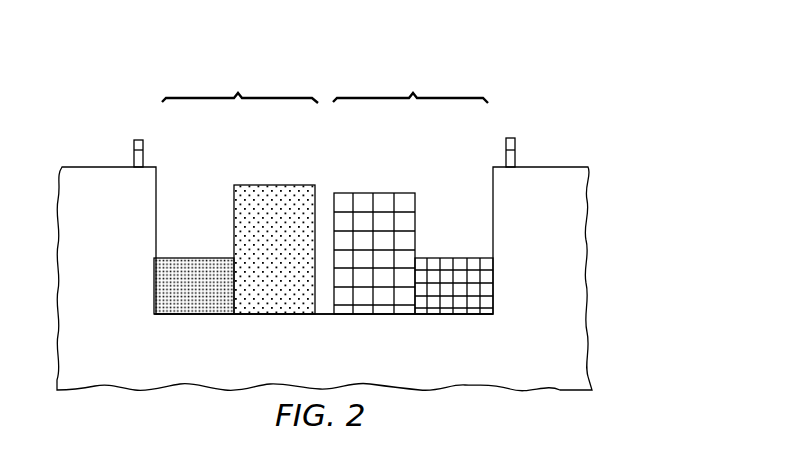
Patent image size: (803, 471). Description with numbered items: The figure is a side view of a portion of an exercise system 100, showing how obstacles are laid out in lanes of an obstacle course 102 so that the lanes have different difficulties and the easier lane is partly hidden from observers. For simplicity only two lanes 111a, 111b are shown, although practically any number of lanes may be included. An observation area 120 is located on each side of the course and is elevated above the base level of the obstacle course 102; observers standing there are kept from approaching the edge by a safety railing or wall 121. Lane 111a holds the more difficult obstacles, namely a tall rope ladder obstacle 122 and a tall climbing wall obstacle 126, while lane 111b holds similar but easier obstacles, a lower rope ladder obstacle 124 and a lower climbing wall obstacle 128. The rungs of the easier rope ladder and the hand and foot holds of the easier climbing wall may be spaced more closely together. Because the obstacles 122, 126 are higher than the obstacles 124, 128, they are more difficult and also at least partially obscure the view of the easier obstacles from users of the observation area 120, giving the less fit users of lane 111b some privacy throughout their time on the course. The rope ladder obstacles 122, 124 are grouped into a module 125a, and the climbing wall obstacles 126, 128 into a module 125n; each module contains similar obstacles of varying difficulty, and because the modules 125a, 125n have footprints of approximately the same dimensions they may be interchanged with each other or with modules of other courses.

The exercise system 100 is at (621, 66).
The obstacle course 102 is at (353, 159).
The lane 111a is at (273, 321).
The lane 111b is at (195, 321).
The observation area 120 is at (106, 175).
The safety railing or wall 121 is at (138, 139).
The obstacle 122 is at (382, 200).
The obstacle 124 is at (447, 262).
The module 125a is at (410, 87).
The module 125n is at (240, 87).
The obstacle 126 is at (275, 190).
The obstacle 128 is at (205, 262).